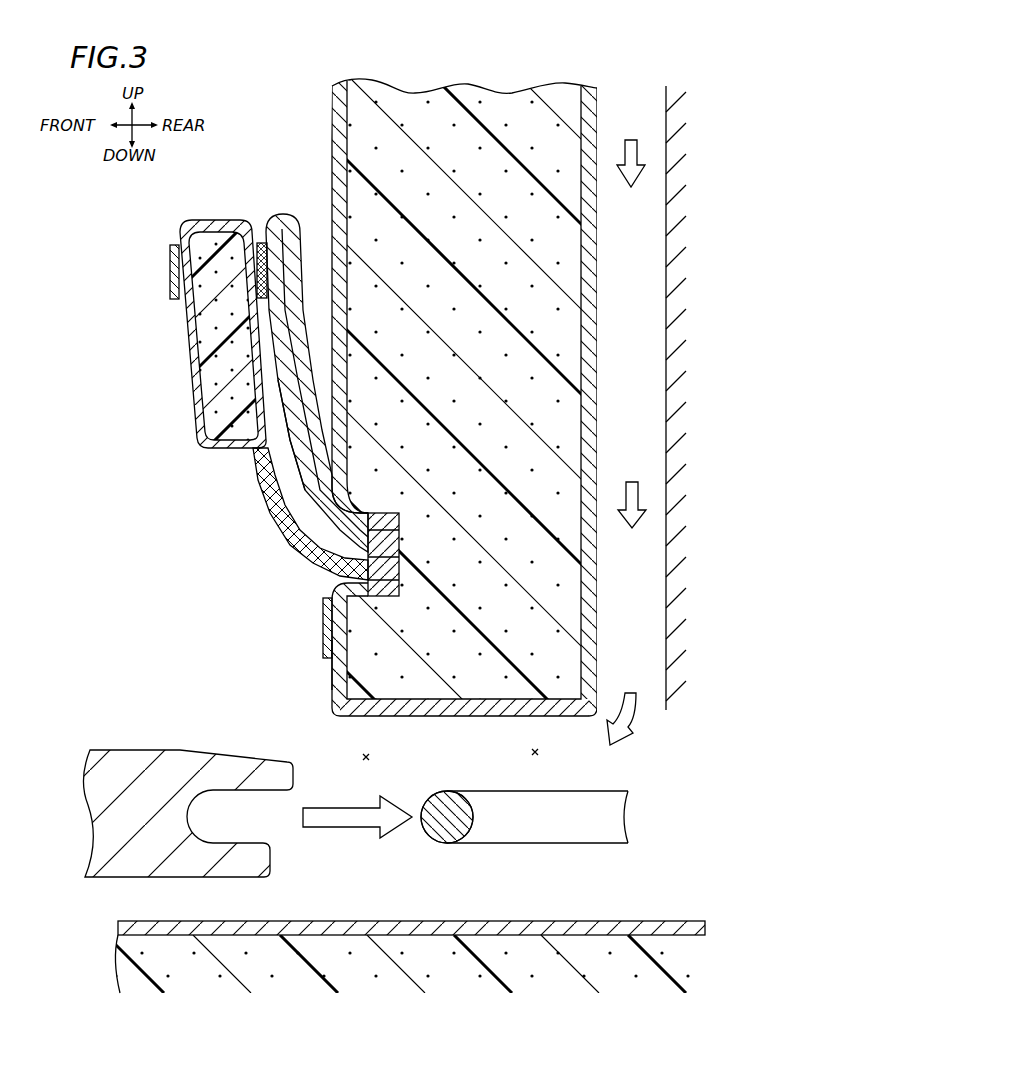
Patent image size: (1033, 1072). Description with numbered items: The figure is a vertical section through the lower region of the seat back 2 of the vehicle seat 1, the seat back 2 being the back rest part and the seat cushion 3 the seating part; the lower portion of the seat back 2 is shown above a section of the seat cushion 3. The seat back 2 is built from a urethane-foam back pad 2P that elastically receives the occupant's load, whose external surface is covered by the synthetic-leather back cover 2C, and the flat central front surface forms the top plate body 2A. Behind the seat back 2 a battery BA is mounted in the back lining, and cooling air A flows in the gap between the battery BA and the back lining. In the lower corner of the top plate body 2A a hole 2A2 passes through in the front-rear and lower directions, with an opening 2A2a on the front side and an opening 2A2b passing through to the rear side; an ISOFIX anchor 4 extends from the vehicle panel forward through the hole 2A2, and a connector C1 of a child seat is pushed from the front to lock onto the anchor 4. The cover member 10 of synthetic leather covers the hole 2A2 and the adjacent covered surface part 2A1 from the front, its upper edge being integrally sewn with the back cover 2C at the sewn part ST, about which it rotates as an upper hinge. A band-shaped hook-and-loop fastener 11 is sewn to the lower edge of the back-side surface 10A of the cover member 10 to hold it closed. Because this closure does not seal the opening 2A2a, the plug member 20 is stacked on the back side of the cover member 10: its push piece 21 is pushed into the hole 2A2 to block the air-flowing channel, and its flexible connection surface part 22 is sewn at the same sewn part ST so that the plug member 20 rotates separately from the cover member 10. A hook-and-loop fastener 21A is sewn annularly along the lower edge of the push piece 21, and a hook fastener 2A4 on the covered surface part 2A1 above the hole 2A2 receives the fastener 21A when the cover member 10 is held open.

The seat 1 is at (238, 115).
The seat back 2 is at (516, 388).
The top plate body 2A is at (487, 231).
The back cover 2C is at (340, 118).
The back pad 2P is at (355, 133).
The covered surface part 2A1 is at (332, 668).
The hole 2A2 is at (524, 812).
The opening on the front side 2A2a is at (364, 755).
The opening passing through to the rear side 2A2b is at (537, 753).
The hook-and-loop fastener (hook) 2A4 is at (326, 612).
The seat cushion 3 is at (300, 917).
The ISOFIX anchor 4 is at (444, 823).
The cover member 10 is at (266, 209).
The back-side surface 10A is at (330, 382).
The hook-and-loop fastener (hook surface) 11 is at (268, 262).
The plug member 20 is at (193, 422).
The push piece 21 is at (188, 334).
The hook-and-loop fastener (loop surface) 21A is at (172, 260).
The connection surface part 22 is at (266, 484).
The sewn part ST is at (376, 553).
The battery BA is at (672, 246).
The cooling air A is at (631, 148).
The connector C1 is at (135, 760).